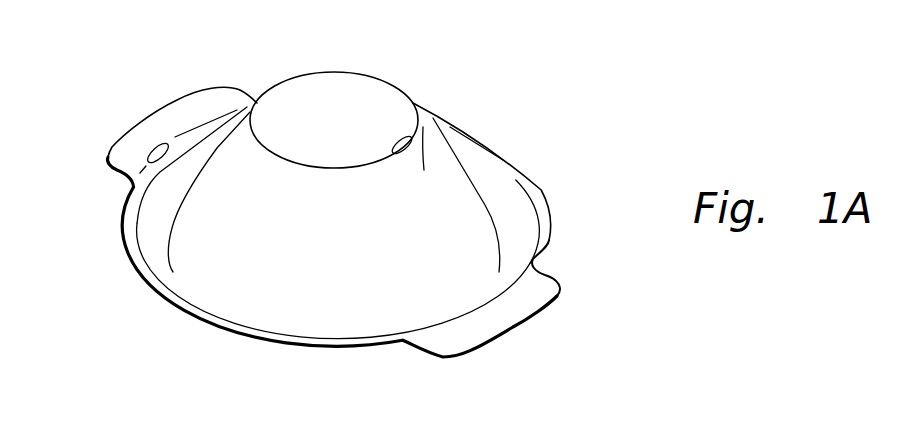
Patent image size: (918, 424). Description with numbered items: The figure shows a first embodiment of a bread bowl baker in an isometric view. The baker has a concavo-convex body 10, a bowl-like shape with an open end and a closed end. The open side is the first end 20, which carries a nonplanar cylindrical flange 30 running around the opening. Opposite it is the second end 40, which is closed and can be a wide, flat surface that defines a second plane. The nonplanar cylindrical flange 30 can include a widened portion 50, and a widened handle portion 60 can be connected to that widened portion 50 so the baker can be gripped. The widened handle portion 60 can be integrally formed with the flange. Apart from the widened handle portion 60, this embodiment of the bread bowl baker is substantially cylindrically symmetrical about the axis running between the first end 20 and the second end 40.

The concavo-convex body 10 is at (437, 110).
The first end 20 is at (487, 197).
The nonplanar cylindrical flange 30 is at (157, 245).
The second end 40 is at (333, 105).
The widened portion 50 is at (540, 227).
The widened handle portion 60 is at (145, 120).